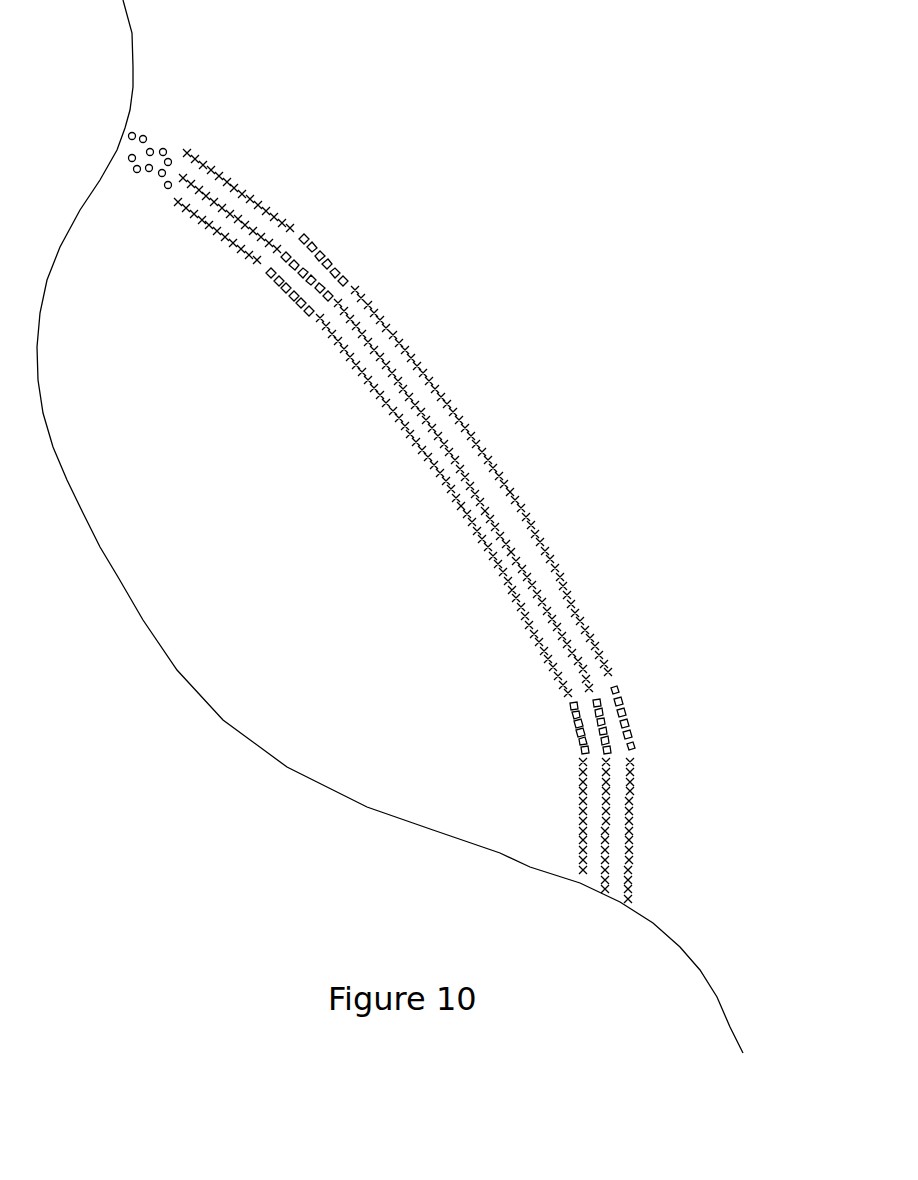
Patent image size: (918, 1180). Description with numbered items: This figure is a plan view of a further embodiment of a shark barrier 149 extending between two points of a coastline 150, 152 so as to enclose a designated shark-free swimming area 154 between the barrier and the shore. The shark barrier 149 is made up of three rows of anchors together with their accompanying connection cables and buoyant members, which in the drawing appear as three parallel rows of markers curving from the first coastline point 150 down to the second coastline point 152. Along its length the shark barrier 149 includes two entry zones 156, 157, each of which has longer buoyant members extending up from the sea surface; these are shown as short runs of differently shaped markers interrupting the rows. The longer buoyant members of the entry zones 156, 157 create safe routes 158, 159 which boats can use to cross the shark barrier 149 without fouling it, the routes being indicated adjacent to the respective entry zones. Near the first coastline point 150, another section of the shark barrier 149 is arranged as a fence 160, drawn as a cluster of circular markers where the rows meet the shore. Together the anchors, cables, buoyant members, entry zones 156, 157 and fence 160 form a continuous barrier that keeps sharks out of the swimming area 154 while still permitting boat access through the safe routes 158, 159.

The shark barrier 149 is at (582, 346).
The point of a coastline 150 is at (78, 67).
The point of a coastline 152 is at (660, 1007).
The designated shark-free swimming area 154 is at (300, 532).
The entry zone 156 is at (336, 260).
The entry zone 157 is at (630, 717).
The safe route 158 is at (424, 246).
The safe route 159 is at (698, 711).
The fence 160 is at (165, 150).